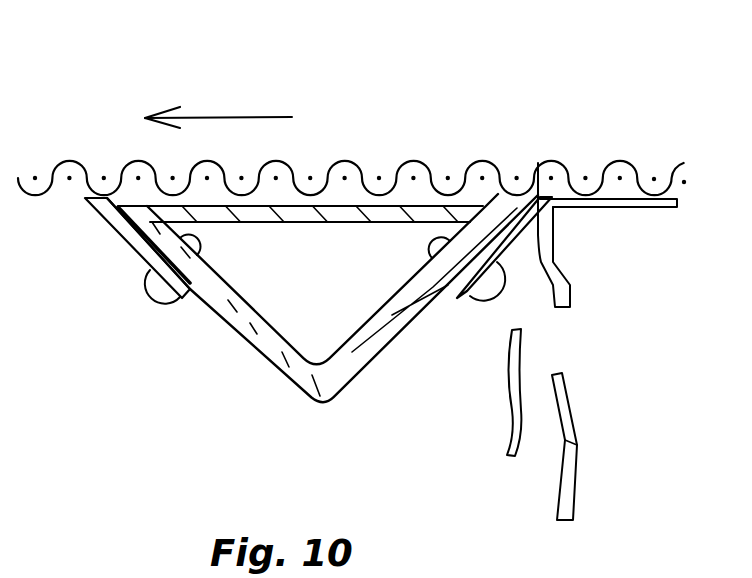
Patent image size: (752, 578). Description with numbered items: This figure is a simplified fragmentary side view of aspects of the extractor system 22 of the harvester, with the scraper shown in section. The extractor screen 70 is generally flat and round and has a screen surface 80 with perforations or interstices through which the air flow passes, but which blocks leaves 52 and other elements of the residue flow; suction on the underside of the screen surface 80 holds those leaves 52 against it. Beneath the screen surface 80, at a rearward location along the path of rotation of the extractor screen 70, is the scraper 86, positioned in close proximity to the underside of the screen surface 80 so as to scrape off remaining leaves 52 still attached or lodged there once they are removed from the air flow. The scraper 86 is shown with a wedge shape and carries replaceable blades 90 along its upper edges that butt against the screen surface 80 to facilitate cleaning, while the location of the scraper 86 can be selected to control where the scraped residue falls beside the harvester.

The extractor system 22 is at (617, 98).
The leaves 52 is at (572, 277).
The extractor screen 70 is at (633, 167).
The screen surface 80 is at (415, 158).
The scraper 86 is at (233, 327).
The replaceable blades 90 is at (85, 200).